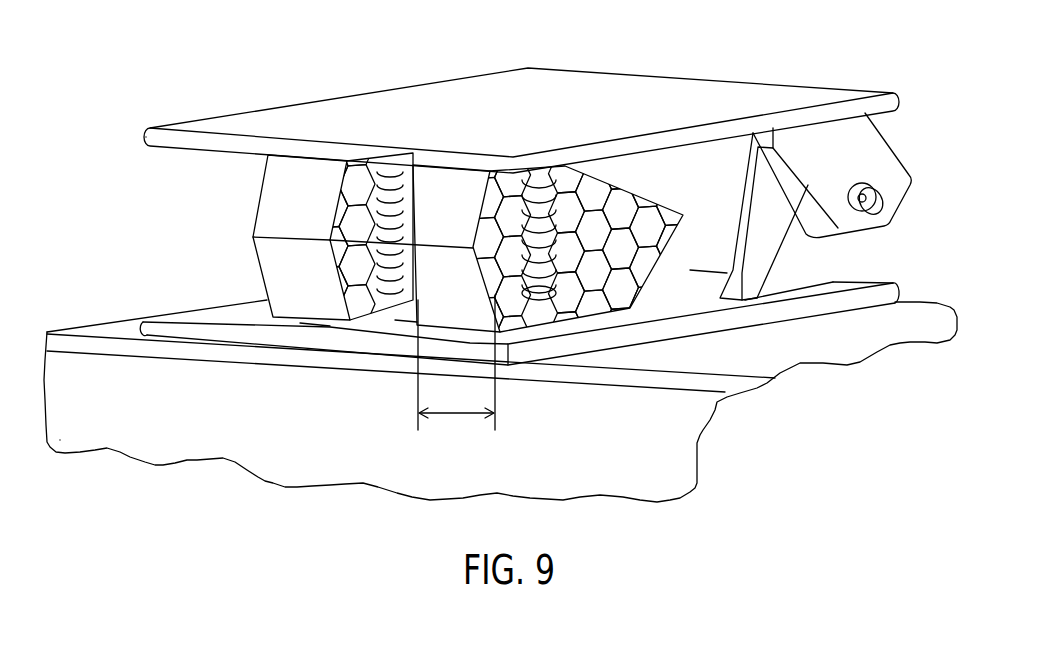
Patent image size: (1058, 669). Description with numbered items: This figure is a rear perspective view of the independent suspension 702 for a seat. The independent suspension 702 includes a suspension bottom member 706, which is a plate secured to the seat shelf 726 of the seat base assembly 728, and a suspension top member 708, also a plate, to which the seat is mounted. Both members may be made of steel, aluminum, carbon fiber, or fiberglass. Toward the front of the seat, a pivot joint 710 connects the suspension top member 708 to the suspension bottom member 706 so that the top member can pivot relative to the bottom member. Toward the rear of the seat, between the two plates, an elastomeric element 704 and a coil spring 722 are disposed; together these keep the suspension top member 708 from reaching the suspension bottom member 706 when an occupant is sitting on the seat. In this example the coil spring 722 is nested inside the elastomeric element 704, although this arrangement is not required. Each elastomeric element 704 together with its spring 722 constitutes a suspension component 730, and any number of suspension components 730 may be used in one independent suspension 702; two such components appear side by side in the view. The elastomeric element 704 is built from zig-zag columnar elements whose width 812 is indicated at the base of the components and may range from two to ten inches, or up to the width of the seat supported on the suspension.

The independent suspension 702 is at (323, 58).
The elastomeric element 704 is at (273, 207).
The suspension bottom member 706 is at (228, 318).
The suspension top member 708 is at (632, 86).
The pivot joint 710 is at (866, 208).
The coil spring 722 is at (394, 192).
The seat shelf 726 is at (593, 381).
The seat base assembly 728 is at (190, 417).
The suspension component 730 is at (314, 328).
The width 812 is at (455, 417).